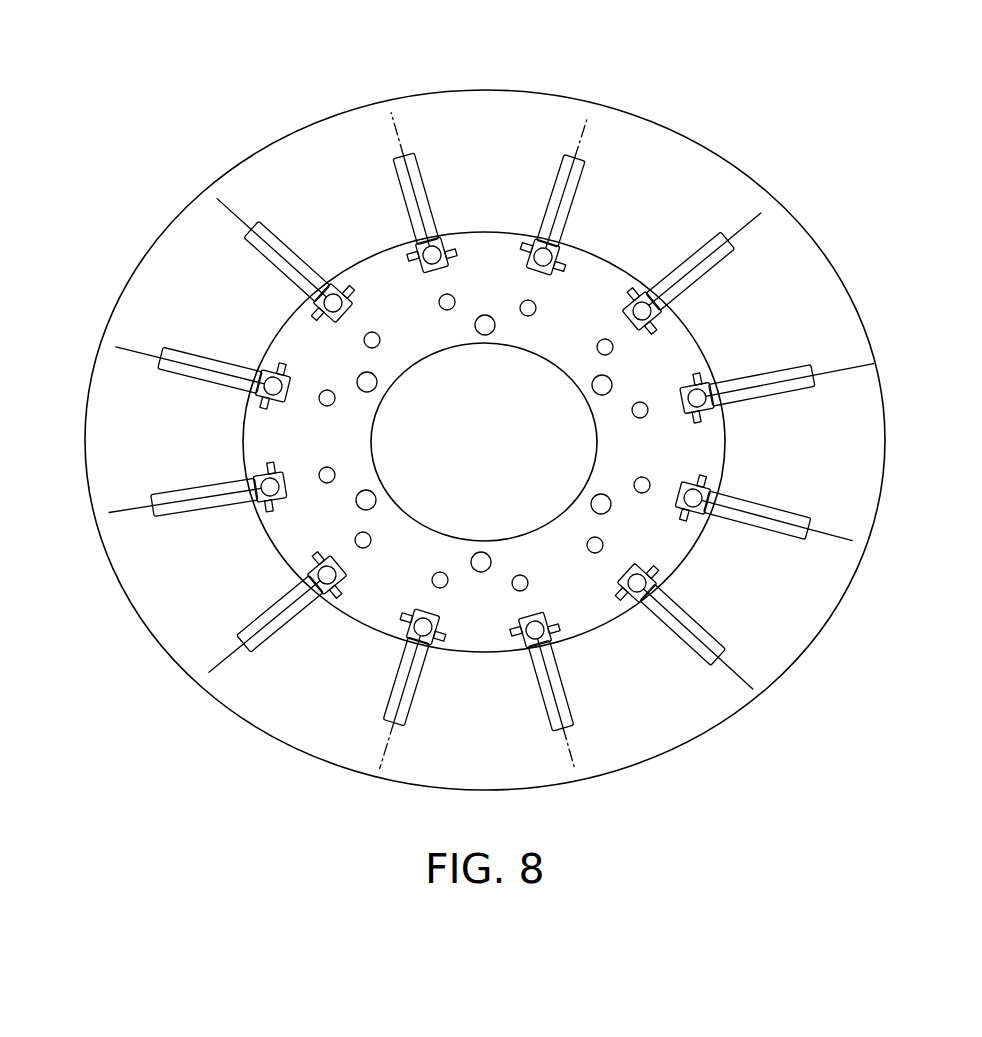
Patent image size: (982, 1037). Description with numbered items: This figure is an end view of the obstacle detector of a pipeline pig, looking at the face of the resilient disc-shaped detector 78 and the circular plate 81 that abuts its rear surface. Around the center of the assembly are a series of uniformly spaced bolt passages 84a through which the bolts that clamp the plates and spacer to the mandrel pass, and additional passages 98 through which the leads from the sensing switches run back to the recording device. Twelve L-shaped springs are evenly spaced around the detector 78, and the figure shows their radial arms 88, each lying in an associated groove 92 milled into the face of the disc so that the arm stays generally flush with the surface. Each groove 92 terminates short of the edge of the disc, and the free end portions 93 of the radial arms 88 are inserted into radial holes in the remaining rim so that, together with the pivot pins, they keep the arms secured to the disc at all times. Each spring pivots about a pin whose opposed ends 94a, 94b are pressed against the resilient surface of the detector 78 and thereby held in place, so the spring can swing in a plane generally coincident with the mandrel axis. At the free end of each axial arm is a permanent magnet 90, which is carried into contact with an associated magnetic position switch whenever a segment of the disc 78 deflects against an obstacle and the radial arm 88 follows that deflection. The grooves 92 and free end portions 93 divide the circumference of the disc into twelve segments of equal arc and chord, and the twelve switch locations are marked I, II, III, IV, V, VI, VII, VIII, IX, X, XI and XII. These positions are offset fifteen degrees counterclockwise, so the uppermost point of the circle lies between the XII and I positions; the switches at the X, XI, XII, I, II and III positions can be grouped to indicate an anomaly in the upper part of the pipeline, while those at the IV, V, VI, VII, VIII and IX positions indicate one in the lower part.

The resilient disc-shaped detector 78 is at (325, 138).
The circular plate 81 is at (413, 316).
The bolt passages 84a is at (373, 382).
The radial arms 88 is at (400, 177).
The permanent magnet 90 is at (713, 375).
The groove 92 is at (430, 190).
The free end portions 93 is at (237, 196).
The pivot pin end 94a is at (518, 235).
The pivot pin end 94b is at (573, 263).
The passages 98 is at (608, 345).
The I o'clock position I is at (581, 154).
The II o'clock position II is at (696, 247).
The III o'clock position III is at (790, 372).
The IV o'clock position IV is at (778, 504).
The V o'clock position V is at (700, 621).
The VI o'clock position VI is at (570, 704).
The VII o'clock position VII is at (413, 698).
The VIII o'clock position VIII is at (277, 631).
The IX o'clock position IX is at (207, 531).
The X o'clock position X is at (188, 381).
The XI o'clock position XI is at (331, 208).
The XII o'clock position XII is at (436, 156).